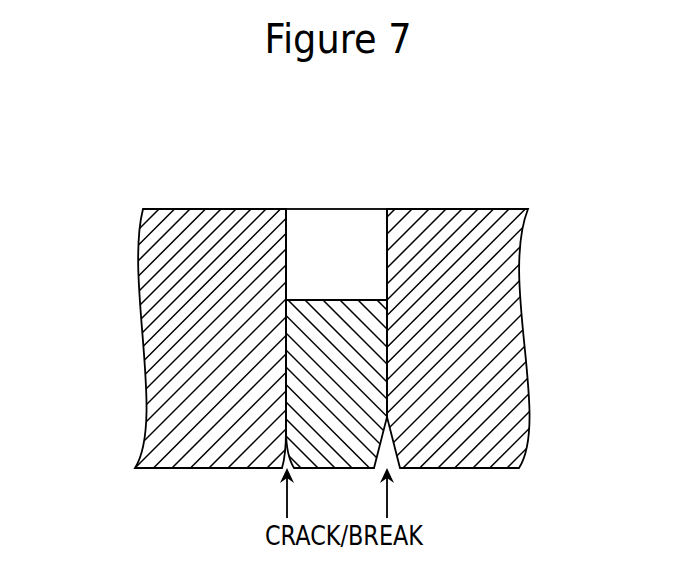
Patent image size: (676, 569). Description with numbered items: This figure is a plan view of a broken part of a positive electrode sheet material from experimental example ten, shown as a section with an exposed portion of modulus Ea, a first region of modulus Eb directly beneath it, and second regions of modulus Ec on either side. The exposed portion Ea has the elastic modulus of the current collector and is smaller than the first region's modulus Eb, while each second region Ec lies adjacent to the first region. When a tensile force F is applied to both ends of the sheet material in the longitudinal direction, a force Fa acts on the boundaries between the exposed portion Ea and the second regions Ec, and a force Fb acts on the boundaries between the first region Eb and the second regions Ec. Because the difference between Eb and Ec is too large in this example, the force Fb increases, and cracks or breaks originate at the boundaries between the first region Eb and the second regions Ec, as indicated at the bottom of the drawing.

The elastic modulus of the exposed portion Ea is at (336, 254).
The elastic modulus of the first region Eb is at (338, 284).
The elastic modulus of the second region Ec is at (338, 284).
The force acting on the boundaries between the exposed portions and the second regio Fa is at (286, 256).
The force acting on the boundaries between the first region and the second regions Fb is at (286, 407).
The force F is at (142, 338).